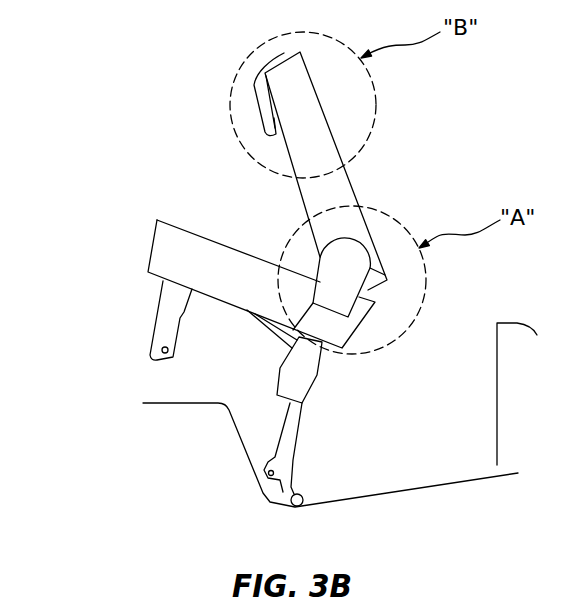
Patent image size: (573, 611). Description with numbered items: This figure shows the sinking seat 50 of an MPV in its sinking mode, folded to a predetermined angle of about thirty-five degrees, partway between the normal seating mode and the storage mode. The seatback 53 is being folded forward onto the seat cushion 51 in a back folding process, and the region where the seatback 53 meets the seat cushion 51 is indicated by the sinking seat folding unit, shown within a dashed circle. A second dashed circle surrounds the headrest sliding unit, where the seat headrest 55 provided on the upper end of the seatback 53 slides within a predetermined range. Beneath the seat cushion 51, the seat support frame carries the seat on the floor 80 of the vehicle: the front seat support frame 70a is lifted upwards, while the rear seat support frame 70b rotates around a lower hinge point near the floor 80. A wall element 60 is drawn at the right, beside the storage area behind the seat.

The sinking seat 50 is at (137, 102).
The seat cushion 51 is at (180, 229).
The seatback 53 is at (295, 150).
The seat headrest 55 is at (258, 105).
The vehicle body wall 60 is at (418, 447).
The front seat support frame 70a is at (164, 328).
The rear seat support frame 70b is at (293, 430).
The floor 80 is at (192, 403).